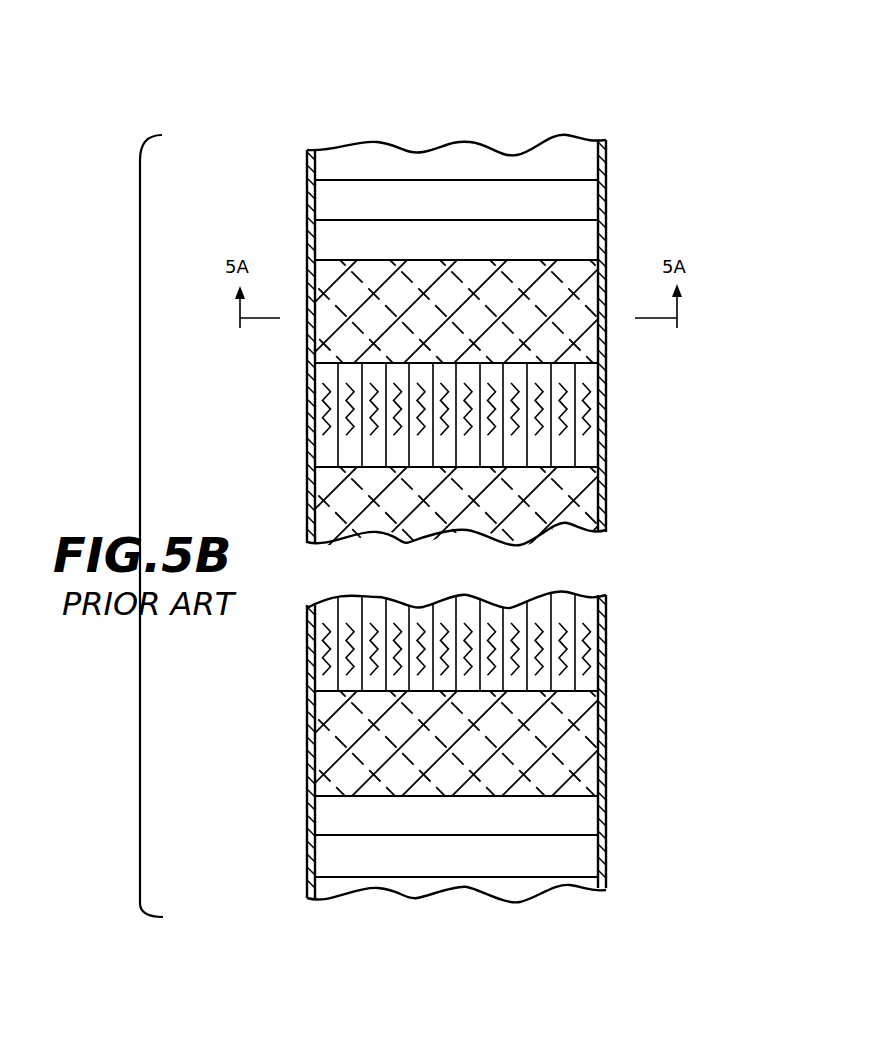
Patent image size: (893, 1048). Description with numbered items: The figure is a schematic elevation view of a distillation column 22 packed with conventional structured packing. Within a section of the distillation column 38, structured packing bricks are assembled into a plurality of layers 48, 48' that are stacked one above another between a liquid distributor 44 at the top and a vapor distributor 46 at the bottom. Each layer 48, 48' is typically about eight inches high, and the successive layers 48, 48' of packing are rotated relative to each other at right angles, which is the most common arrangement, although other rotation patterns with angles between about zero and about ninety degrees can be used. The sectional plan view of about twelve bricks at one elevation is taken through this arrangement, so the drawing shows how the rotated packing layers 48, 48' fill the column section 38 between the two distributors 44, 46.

The section of a distillation column 38 is at (728, 82).
The distillation column 22 is at (606, 345).
The liquid distributor 44 is at (583, 202).
The vapor distributor 46 is at (582, 860).
The layer of structured packing 48 is at (468, 535).
The layer of structured packing 48' is at (412, 527).